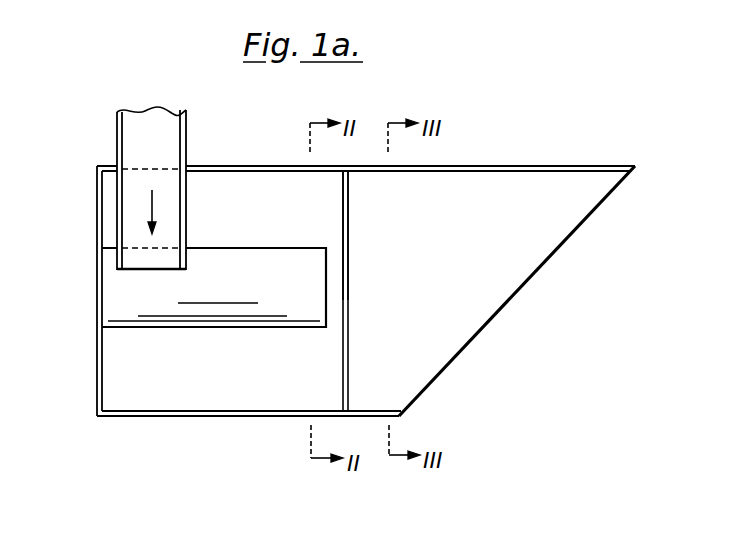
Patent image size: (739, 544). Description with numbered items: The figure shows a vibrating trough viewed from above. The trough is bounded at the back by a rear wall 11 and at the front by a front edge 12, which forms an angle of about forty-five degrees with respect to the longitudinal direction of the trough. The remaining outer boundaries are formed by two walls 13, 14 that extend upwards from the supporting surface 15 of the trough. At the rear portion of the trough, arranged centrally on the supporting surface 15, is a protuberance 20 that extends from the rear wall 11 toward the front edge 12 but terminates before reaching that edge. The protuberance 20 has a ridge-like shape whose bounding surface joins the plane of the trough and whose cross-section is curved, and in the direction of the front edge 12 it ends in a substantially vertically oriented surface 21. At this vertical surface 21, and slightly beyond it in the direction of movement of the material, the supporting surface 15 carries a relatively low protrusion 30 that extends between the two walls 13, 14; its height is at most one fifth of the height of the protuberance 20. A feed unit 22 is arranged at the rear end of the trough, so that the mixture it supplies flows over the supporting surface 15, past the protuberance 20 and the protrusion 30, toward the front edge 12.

The rear wall 11 is at (97, 295).
The front edge 12 is at (532, 273).
The wall 13 is at (247, 167).
The wall 14 is at (248, 416).
The supporting surface 15 is at (373, 312).
The protuberance 20 is at (152, 305).
The vertically oriented surface 21 is at (348, 293).
The feed unit 22 is at (130, 130).
The protrusion 30 is at (348, 225).